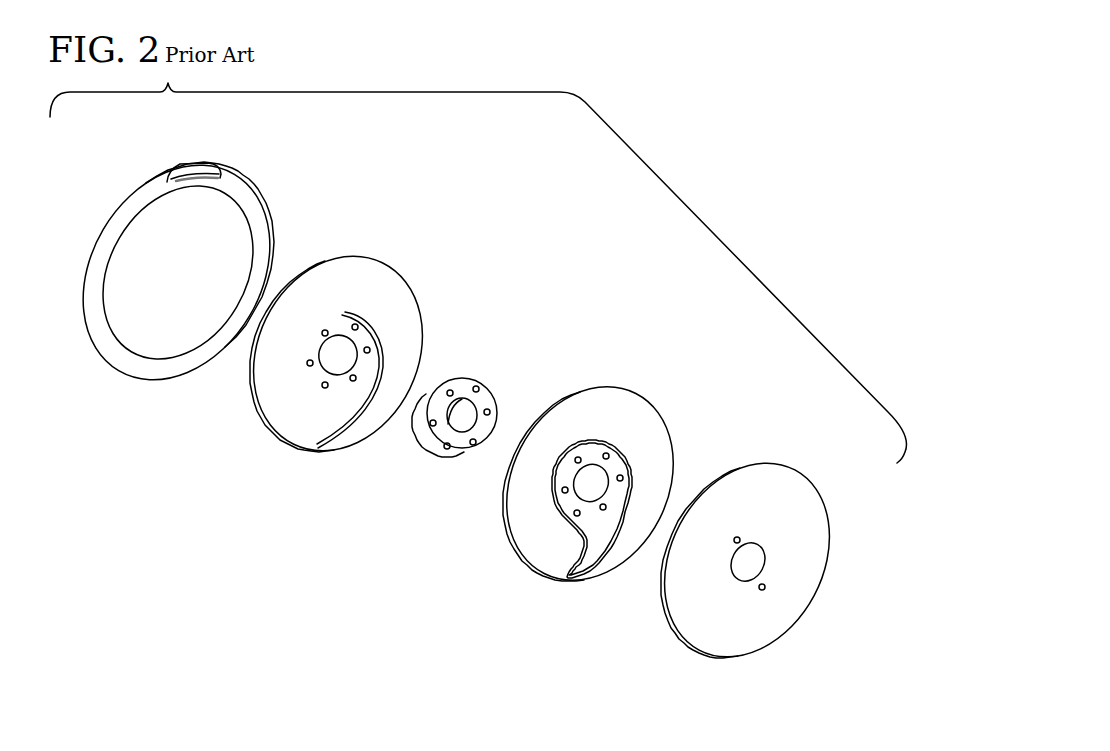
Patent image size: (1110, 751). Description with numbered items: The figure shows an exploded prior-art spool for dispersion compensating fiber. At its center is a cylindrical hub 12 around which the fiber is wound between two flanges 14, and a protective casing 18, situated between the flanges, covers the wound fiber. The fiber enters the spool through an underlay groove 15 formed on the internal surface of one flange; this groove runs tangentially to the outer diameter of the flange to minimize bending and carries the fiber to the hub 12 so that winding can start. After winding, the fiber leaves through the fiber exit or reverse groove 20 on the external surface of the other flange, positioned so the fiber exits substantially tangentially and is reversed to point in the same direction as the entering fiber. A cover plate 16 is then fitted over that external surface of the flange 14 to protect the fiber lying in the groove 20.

The cylindrical hub 12 is at (443, 377).
The flange 14 is at (524, 484).
The underlay groove 15 is at (379, 333).
The cover plate 16 is at (790, 507).
The protective casing 18 is at (127, 210).
The fiber exit groove 20 is at (628, 459).